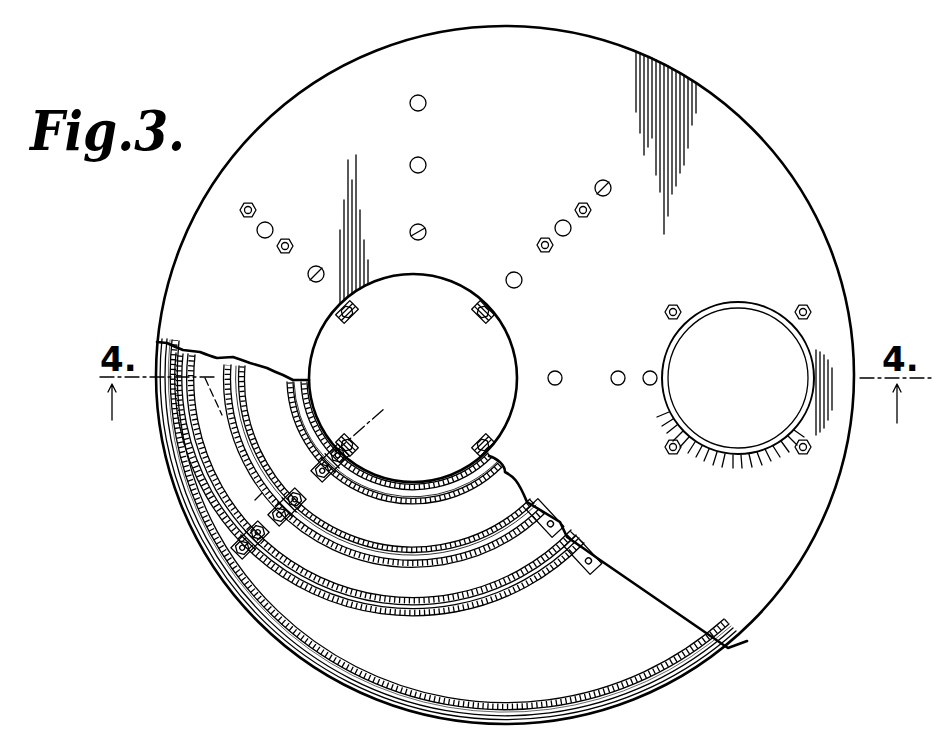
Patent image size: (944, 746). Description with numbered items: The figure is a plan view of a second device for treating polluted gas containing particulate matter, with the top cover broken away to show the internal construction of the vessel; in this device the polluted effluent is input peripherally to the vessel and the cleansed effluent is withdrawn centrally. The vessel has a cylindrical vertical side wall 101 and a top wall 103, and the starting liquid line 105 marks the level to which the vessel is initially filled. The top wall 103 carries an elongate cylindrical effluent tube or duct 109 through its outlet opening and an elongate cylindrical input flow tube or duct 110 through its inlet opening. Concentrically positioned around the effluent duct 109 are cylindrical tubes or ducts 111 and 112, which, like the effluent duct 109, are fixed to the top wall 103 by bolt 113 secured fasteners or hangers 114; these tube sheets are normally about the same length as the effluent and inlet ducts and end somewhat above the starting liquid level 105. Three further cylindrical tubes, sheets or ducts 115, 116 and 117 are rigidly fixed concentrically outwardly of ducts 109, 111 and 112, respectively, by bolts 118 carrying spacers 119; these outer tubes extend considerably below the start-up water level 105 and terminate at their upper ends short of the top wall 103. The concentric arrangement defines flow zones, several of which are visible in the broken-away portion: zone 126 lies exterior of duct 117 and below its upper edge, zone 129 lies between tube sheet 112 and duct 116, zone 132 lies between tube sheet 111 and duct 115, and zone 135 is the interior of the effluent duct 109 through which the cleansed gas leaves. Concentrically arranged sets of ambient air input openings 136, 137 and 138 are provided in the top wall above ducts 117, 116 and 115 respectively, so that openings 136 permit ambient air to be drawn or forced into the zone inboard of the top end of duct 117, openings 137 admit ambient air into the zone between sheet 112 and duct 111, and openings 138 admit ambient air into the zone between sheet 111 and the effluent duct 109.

The cylindrical vertical side wall 101 is at (366, 655).
The top wall 103 is at (762, 152).
The starting liquid line 105 is at (744, 388).
The effluent tube or duct 109 is at (458, 478).
The input flow tube or duct 110 is at (736, 302).
The cylindrical tube or duct 111 is at (448, 545).
The cylindrical tube or duct 112 is at (458, 570).
The bolt 113 is at (250, 202).
The fasteners or hangers 114 is at (547, 512).
The cylindrical tube, sheet or duct 115 is at (398, 500).
The cylindrical tube, sheet or duct 116 is at (435, 566).
The cylindrical tube, sheet or duct 117 is at (440, 612).
The bolts 118 is at (355, 316).
The spacers 119 is at (322, 455).
The zone 126 is at (449, 526).
The zone 129 is at (360, 585).
The zone 132 is at (407, 452).
The zone 135 is at (460, 378).
The ambient air input openings 136 is at (426, 103).
The ambient air input openings 137 is at (426, 165).
The ambient air input openings 138 is at (426, 230).